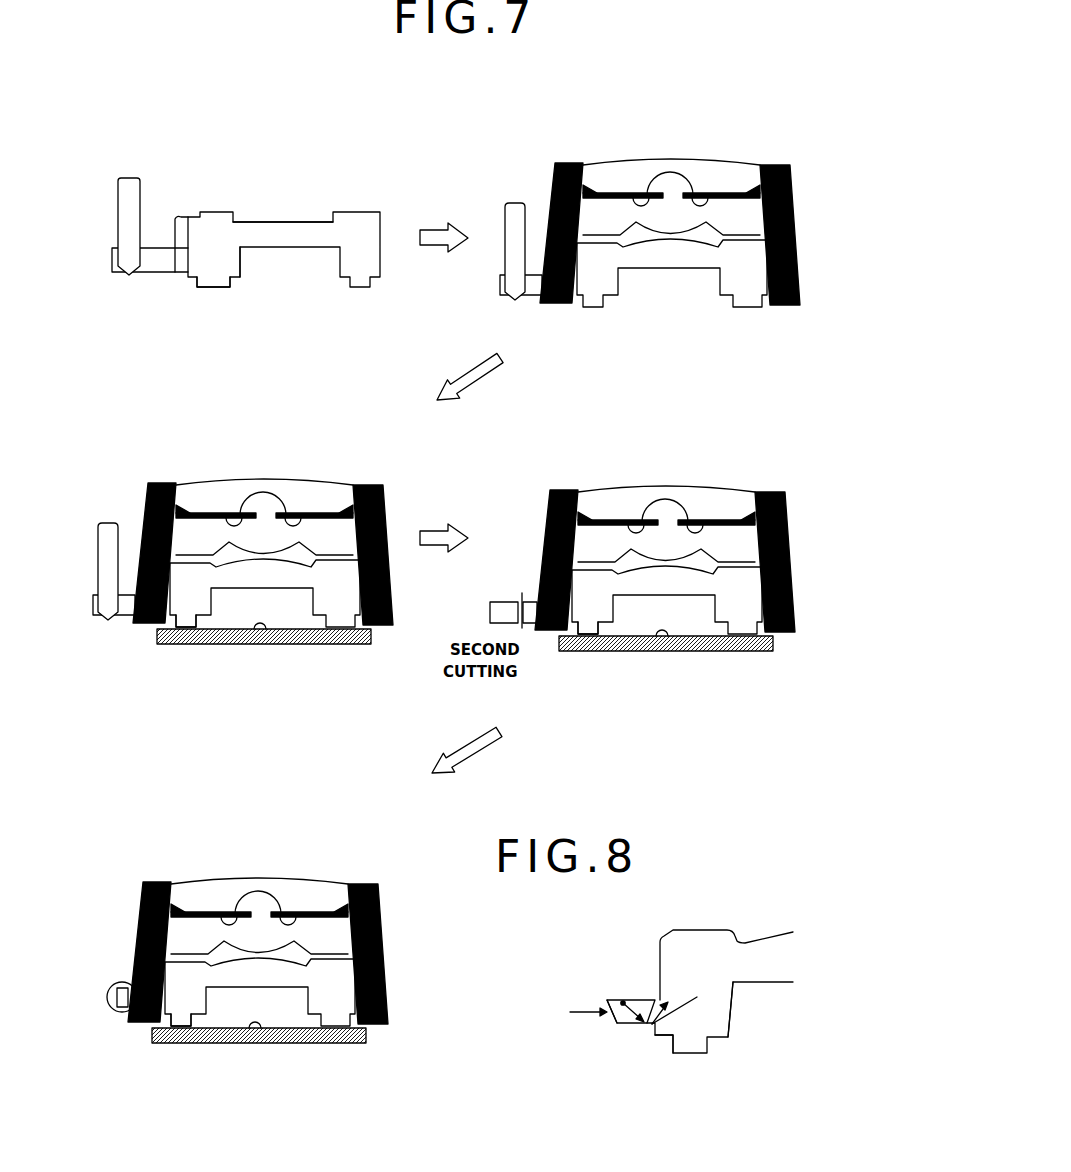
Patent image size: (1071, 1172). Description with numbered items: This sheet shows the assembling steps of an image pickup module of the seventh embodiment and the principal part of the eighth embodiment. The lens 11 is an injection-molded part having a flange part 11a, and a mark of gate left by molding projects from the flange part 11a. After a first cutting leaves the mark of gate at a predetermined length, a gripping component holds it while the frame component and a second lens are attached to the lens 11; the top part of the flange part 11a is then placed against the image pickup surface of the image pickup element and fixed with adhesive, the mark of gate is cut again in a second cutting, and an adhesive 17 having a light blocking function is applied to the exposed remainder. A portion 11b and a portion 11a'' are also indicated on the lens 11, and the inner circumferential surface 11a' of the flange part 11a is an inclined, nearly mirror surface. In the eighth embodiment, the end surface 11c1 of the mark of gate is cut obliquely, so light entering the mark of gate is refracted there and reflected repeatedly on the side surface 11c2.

In FIG. 8, the lens 11 is at (767, 947).
In FIG. 7, the flange part 11a is at (213, 300).
In FIG. 8, the flange part 11a is at (664, 1064).
In FIG. 7, the inner circumferential surface of the flange part 11a' is at (269, 259).
In FIG. 8, the inner circumferential surface of the flange part 11a' is at (767, 1012).
In FIG. 7, the hook portion of lead 11a'' is at (173, 227).
In FIG. 7, the upper part of lead frame 11b is at (347, 210).
In FIG. 8, the end surface of the mark of gate 11c1 is at (613, 1017).
In FIG. 8, the side surface of the mark of gate 11c2 is at (643, 998).
In FIG. 7, the adhesive having light blocking function 17 is at (97, 989).